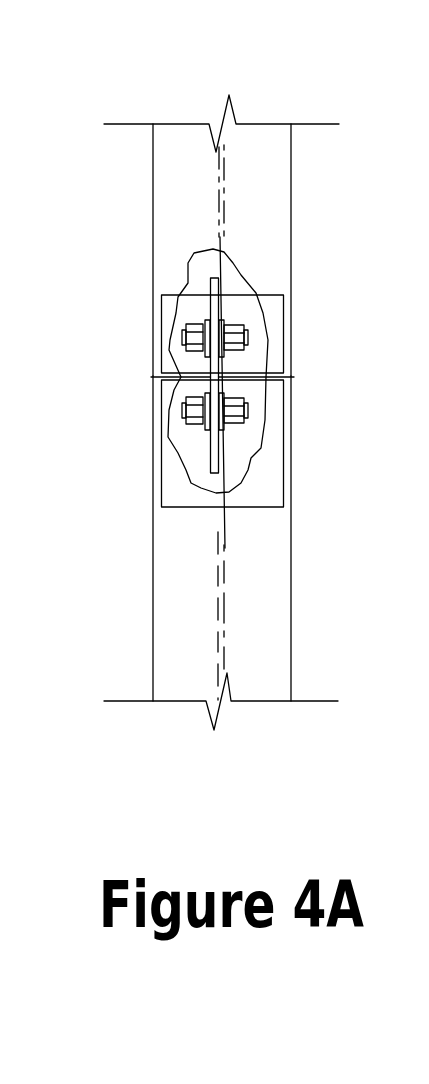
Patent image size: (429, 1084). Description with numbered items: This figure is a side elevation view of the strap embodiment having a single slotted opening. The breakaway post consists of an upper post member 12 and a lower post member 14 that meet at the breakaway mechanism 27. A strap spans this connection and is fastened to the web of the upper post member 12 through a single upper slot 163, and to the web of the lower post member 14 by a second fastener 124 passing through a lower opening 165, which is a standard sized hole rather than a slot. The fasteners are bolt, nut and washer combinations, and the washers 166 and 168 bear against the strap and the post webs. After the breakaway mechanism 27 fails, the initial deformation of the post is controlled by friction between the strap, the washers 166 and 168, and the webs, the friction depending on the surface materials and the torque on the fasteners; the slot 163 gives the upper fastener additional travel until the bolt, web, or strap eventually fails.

The upper post member 12 is at (250, 235).
The lower post member 14 is at (250, 553).
The breakaway mechanism 27 is at (274, 401).
The second fastener 124 is at (283, 371).
The single upper slot 163 is at (296, 392).
The lower opening 165 is at (303, 442).
The washer 166 is at (159, 310).
The washer 168 is at (140, 439).